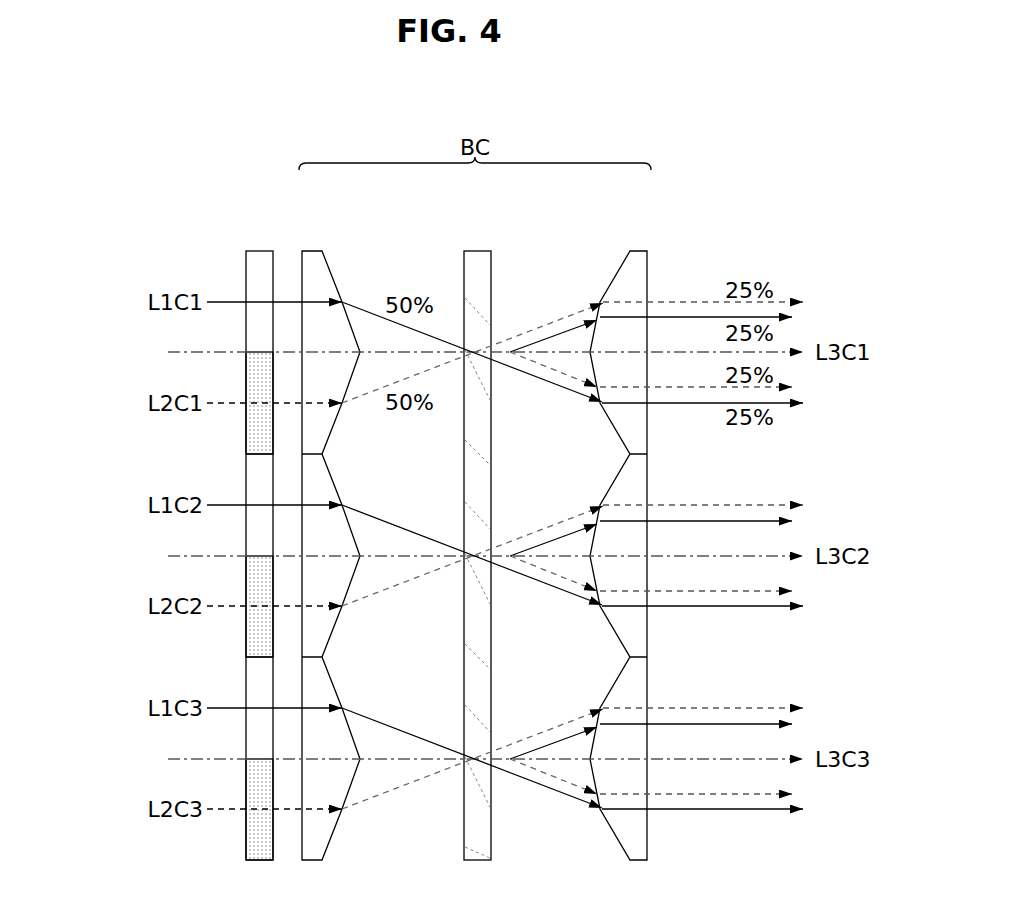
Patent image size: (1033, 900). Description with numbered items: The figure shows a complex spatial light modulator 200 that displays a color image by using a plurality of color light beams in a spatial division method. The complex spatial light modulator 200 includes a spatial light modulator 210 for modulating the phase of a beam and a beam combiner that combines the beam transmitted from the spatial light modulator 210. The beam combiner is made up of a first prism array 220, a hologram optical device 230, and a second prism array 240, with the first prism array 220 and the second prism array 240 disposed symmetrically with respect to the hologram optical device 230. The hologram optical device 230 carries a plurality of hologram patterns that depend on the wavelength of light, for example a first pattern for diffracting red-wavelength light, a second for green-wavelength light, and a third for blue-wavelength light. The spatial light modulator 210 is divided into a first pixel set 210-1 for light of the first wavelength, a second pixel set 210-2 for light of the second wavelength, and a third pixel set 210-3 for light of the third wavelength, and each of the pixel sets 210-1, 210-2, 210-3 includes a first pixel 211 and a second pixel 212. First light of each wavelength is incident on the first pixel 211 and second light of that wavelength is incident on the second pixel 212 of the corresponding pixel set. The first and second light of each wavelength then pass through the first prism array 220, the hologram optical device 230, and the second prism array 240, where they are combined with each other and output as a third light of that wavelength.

The complex spatial light modulator 200 is at (780, 203).
The spatial light modulator 210 is at (259, 251).
The first pixel set 210-1 is at (104, 329).
The second pixel set 210-2 is at (104, 533).
The third pixel set 210-3 is at (104, 736).
The first pixel 211 is at (246, 323).
The second pixel 212 is at (246, 377).
The first prism array 220 is at (311, 251).
The hologram optical device 230 is at (477, 251).
The second prism array 240 is at (637, 251).